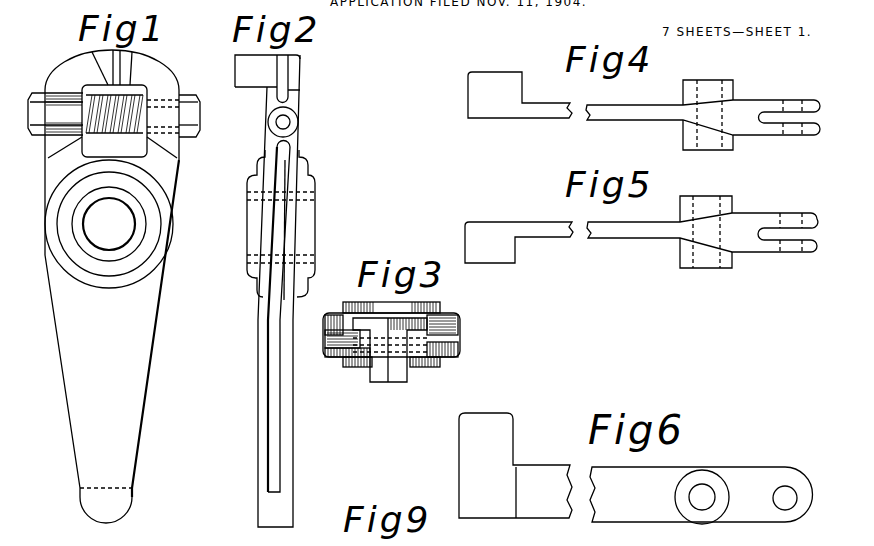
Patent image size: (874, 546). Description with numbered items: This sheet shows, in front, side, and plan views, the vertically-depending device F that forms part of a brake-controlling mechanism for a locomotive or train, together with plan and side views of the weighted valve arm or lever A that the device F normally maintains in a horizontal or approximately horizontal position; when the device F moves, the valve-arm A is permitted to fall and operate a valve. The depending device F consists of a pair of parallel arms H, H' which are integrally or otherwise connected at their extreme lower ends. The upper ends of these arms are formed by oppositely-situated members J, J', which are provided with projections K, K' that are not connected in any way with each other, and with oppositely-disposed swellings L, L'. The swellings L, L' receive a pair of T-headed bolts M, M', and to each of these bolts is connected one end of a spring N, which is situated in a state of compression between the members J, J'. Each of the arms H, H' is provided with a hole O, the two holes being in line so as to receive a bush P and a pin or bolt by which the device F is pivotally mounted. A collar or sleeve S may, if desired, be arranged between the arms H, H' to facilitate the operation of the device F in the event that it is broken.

In FIG. 1, the parallel arm H is at (112, 286).
In FIG. 2, the parallel arm H is at (261, 291).
In FIG. 3, the parallel arm H is at (411, 334).
In FIG. 2, the parallel arm H' is at (296, 317).
In FIG. 3, the parallel arm H' is at (321, 332).
In FIG. 1, the vertically-depending device F is at (150, 418).
In FIG. 3, the vertically-depending device F is at (438, 305).
In FIG. 1, the projection K is at (157, 63).
In FIG. 2, the projection K is at (267, 79).
In FIG. 3, the projection K is at (390, 366).
In FIG. 1, the projection K' is at (69, 63).
In FIG. 2, the projection K' is at (316, 71).
In FIG. 3, the projection K' is at (370, 398).
In FIG. 1, the spring N is at (112, 121).
In FIG. 1, the T-headed bolt M is at (194, 134).
In FIG. 1, the T-headed bolt M' is at (48, 134).
In FIG. 1, the swelling L is at (175, 102).
In FIG. 2, the swelling L is at (296, 116).
In FIG. 3, the swelling L is at (462, 335).
In FIG. 1, the swelling L' is at (64, 80).
In FIG. 2, the swelling L' is at (248, 119).
In FIG. 3, the swelling L' is at (337, 361).
In FIG. 1, the member J is at (120, 224).
In FIG. 2, the member J is at (247, 220).
In FIG. 1, the member J' is at (29, 191).
In FIG. 2, the member J' is at (311, 214).
In FIG. 1, the hole O is at (109, 224).
In FIG. 2, the hole O is at (258, 261).
In FIG. 1, the bush P is at (135, 241).
In FIG. 2, the bush P is at (258, 198).
In FIG. 2, the collar or sleeve S is at (280, 232).
In FIG. 5, the valve arm or lever A is at (635, 237).
In FIG. 6, the valve arm or lever A is at (635, 478).